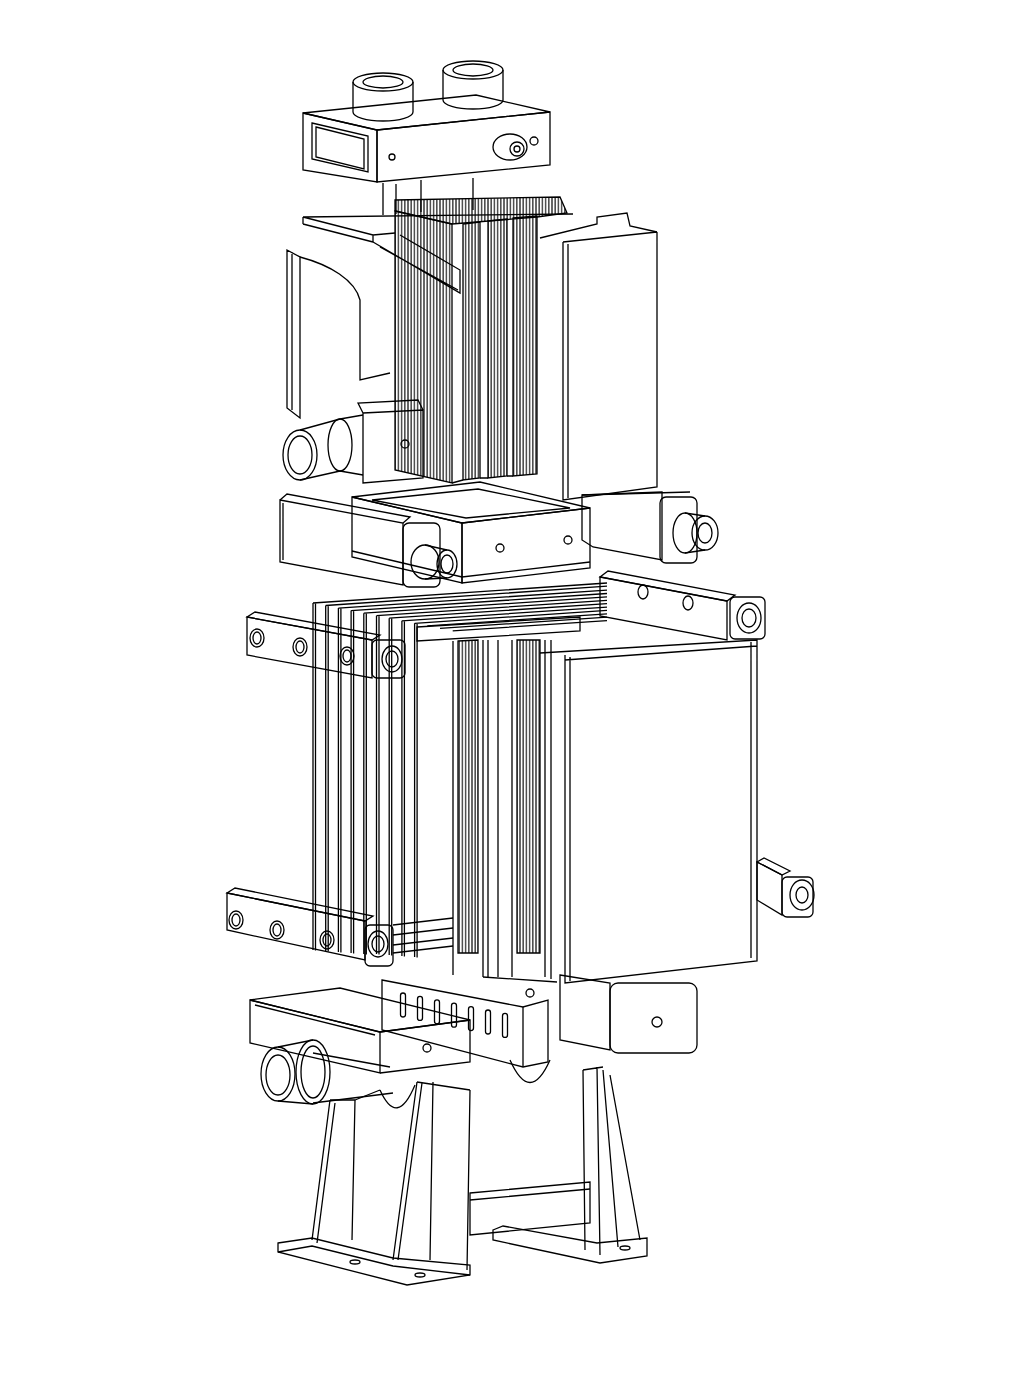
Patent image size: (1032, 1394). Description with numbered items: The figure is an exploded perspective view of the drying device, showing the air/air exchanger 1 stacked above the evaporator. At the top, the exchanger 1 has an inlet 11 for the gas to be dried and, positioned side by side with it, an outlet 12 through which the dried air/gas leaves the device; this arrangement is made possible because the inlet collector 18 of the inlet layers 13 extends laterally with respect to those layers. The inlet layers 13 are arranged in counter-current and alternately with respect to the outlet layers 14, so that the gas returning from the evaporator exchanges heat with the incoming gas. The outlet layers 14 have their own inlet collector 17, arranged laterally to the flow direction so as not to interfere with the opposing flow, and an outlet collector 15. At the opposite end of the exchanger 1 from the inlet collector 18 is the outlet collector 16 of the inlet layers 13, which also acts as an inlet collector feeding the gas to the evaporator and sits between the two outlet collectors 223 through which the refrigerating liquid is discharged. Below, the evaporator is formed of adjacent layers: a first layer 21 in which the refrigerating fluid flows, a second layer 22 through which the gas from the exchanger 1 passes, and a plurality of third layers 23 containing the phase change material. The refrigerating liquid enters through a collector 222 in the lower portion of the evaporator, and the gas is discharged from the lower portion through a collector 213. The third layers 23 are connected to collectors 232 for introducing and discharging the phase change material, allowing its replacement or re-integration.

The air/air exchanger 1 is at (703, 228).
The inlet 11 is at (380, 100).
The outlet 12 is at (480, 93).
The outlet collector 15 is at (473, 157).
The inlet collector 18 is at (327, 243).
The inlet layers 13 is at (503, 343).
The outlet layers 14 is at (520, 270).
The inlet collector 17 is at (345, 398).
The outlet collector 16 is at (540, 542).
The outlet collectors 223 is at (637, 527).
The collectors 232 is at (787, 872).
The third layers 23 is at (450, 780).
The first layer 21 is at (540, 880).
The second layer 22 is at (477, 913).
The collector 222 is at (520, 990).
The collector 213 is at (253, 1008).